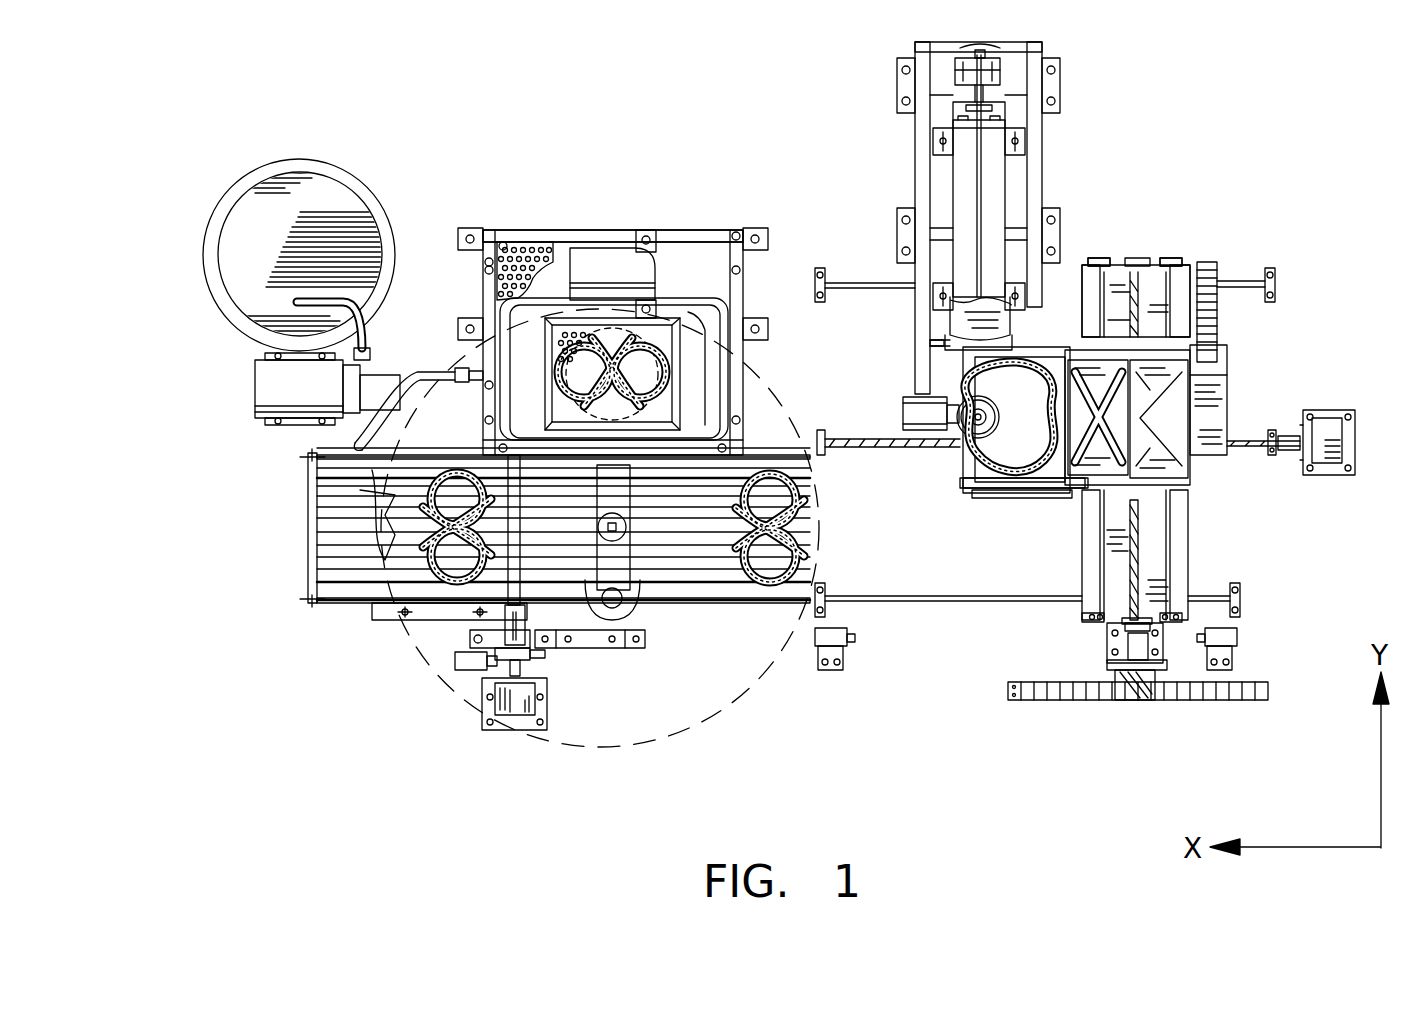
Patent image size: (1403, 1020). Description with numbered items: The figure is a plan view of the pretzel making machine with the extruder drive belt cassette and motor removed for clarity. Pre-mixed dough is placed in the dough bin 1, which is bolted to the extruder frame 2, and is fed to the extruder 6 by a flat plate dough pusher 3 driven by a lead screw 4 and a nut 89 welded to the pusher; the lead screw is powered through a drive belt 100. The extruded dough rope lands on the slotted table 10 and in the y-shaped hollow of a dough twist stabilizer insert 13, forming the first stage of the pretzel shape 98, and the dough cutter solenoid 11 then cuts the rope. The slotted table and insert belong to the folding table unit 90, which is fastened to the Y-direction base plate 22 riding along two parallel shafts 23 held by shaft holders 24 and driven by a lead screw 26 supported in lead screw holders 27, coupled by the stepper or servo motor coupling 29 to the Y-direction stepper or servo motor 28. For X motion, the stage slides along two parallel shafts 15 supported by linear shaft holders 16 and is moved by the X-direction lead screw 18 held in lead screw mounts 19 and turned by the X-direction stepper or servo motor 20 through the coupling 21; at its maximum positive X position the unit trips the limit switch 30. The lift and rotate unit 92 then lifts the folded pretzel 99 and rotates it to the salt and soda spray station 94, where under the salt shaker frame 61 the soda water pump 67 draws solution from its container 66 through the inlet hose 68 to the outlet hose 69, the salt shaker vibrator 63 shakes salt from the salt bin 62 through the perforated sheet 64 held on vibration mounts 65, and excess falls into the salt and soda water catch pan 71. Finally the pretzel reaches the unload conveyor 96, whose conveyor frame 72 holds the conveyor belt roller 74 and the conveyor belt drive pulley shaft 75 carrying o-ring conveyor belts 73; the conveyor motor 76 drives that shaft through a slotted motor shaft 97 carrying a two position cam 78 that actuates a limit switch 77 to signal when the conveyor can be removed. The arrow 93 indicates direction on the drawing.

The dough bin 1 is at (990, 172).
The extruder frame 2 is at (1035, 190).
The dough pusher 3 is at (1005, 123).
The lead screw 4 is at (975, 198).
The extruder 6 is at (970, 425).
The slotted table 10 is at (1010, 440).
The dough cutter solenoid 11 is at (920, 420).
The dough twist stabilizer insert 13 is at (1058, 495).
The parallel shafts 15 is at (1245, 290).
The linear shaft holders 16 is at (825, 270).
The X-direction lead screw 18 is at (1248, 438).
The lead screw mounts 19 is at (1272, 455).
The X-direction stepper or servo motor 20 is at (1330, 428).
The X-direction stepper or servo motor coupling 21 is at (1288, 436).
The Y-direction base plate 22 is at (1165, 265).
The parallel shafts 23 is at (1188, 528).
The shaft holders 24 is at (1096, 262).
The lead screw 26 is at (1140, 580).
The lead screw holders 27 is at (1135, 290).
The Y-direction stepper or servo motor 28 is at (1125, 695).
The stepper or servo motor coupling 29 is at (1130, 652).
The limit switch 30 is at (1237, 640).
The salt shaker frame 61 is at (695, 235).
The salt bin 62 is at (705, 305).
The salt shaker vibrator 63 is at (607, 268).
The perforated sheet 64 is at (515, 240).
The vibration mounts 65 is at (500, 240).
The container 66 is at (323, 208).
The soda water pump 67 is at (275, 388).
The inlet hose 68 is at (365, 330).
The outlet hose 69 is at (425, 375).
The salt and soda water catch pan 71 is at (700, 395).
The conveyor frame 72 is at (372, 612).
The o-ring conveyor belts 73 is at (312, 588).
The conveyor belt roller 74 is at (312, 480).
The conveyor belt drive pulley shaft 75 is at (508, 612).
The conveyor motor 76 is at (512, 700).
The limit switch 77 is at (463, 663).
The two position cam 78 is at (533, 654).
The nut 89 is at (965, 122).
The folding table unit 90 is at (965, 515).
The lift and rotate unit 92 is at (665, 628).
The direction arrow 93 is at (1220, 546).
The salt and soda spray station 94 is at (661, 192).
The unload conveyor 96 is at (285, 514).
The motor shaft 97 is at (522, 668).
The first stage of the pretzel shape 98 is at (1077, 417).
The pretzel 99 is at (782, 580).
The drive belt 100 is at (985, 48).